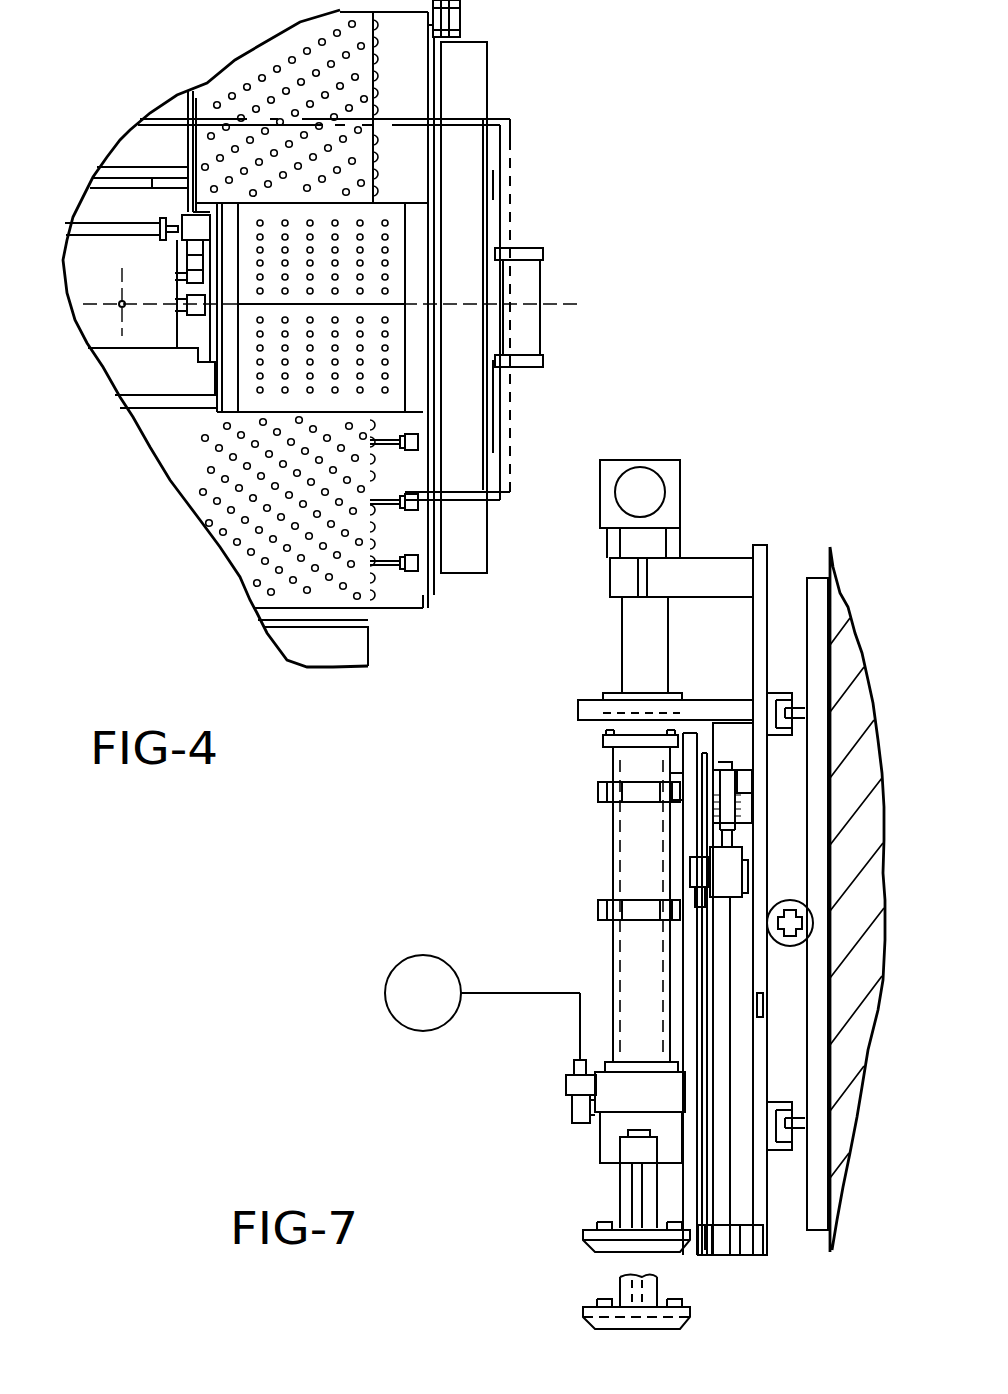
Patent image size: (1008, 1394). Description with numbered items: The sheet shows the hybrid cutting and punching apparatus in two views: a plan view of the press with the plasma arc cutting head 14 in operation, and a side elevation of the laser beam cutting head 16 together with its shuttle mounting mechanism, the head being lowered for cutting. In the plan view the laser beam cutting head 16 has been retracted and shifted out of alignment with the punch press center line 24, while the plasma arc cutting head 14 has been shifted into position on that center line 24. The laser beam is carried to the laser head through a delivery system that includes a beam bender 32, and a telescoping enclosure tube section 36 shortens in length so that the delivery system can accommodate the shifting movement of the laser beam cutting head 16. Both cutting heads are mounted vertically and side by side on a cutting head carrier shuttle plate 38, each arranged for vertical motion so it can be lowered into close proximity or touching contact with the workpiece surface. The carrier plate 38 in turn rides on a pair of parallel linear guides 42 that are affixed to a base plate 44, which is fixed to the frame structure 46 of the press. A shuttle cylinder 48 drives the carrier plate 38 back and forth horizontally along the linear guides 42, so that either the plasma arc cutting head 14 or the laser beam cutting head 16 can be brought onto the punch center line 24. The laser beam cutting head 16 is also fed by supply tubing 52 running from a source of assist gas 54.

In FIG. 4, the plasma arc cutting head 14 is at (207, 313).
In FIG. 4, the laser beam cutting head 16 is at (207, 280).
In FIG. 7, the laser beam cutting head 16 is at (590, 1235).
In FIG. 4, the center line 24 is at (543, 303).
In FIG. 7, the beam bender 32 is at (668, 460).
In FIG. 4, the telescoping enclosure tube section 36 is at (217, 253).
In FIG. 7, the cutting head carrier shuttle plate 38 is at (753, 648).
In FIG. 7, the linear guides 42 is at (780, 690).
In FIG. 7, the base plate 44 is at (795, 1215).
In FIG. 7, the frame structure 46 is at (857, 623).
In FIG. 7, the shuttle cylinder 48 is at (790, 900).
In FIG. 7, the supply tubing 52 is at (528, 979).
In FIG. 7, the source of assist gas 54 is at (390, 961).